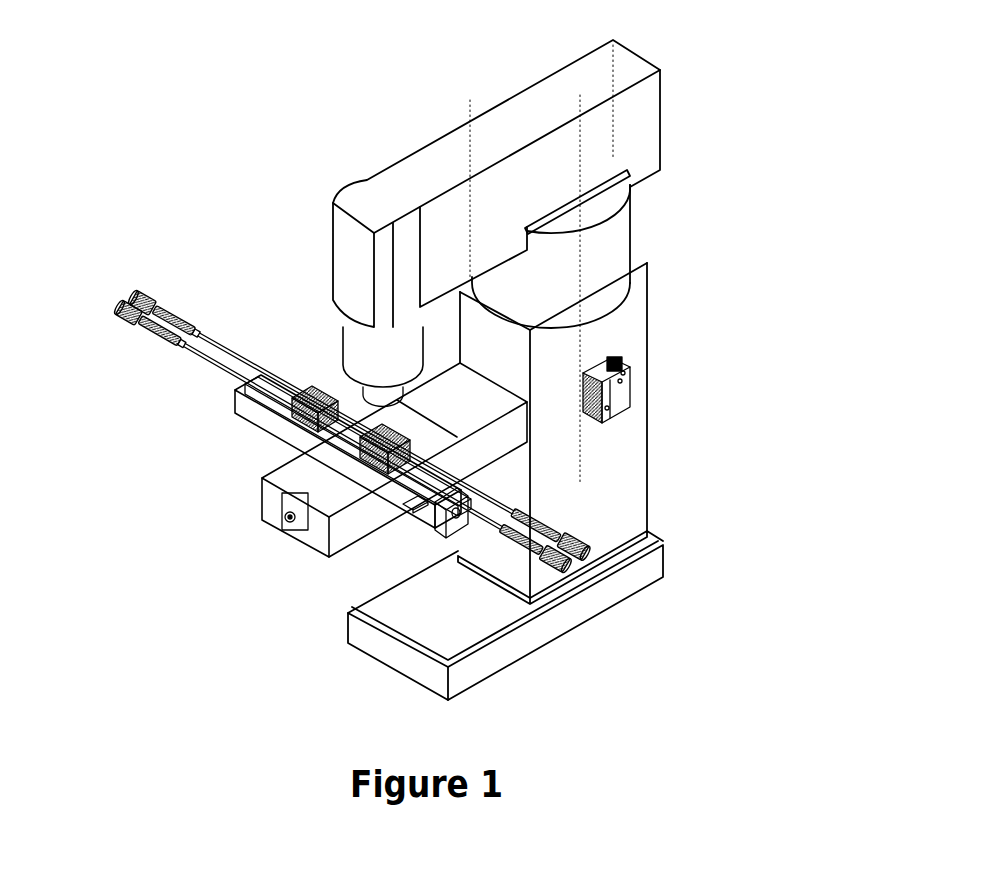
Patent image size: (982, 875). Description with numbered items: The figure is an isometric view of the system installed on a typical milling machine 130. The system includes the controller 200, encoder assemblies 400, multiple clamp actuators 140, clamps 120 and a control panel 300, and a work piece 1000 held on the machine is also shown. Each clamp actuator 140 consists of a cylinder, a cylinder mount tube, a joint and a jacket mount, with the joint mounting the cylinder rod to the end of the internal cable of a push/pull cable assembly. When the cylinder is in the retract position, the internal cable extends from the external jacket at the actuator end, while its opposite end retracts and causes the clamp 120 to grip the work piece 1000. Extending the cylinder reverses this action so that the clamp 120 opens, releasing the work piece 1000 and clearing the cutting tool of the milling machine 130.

The work piece 1000 is at (433, 388).
The clamp 120 is at (315, 385).
The milling machine 130 is at (385, 397).
The clamp actuator 140 is at (145, 293).
The controller 200 is at (635, 360).
The control panel 300 is at (400, 525).
The encoder assembly 400 is at (288, 492).